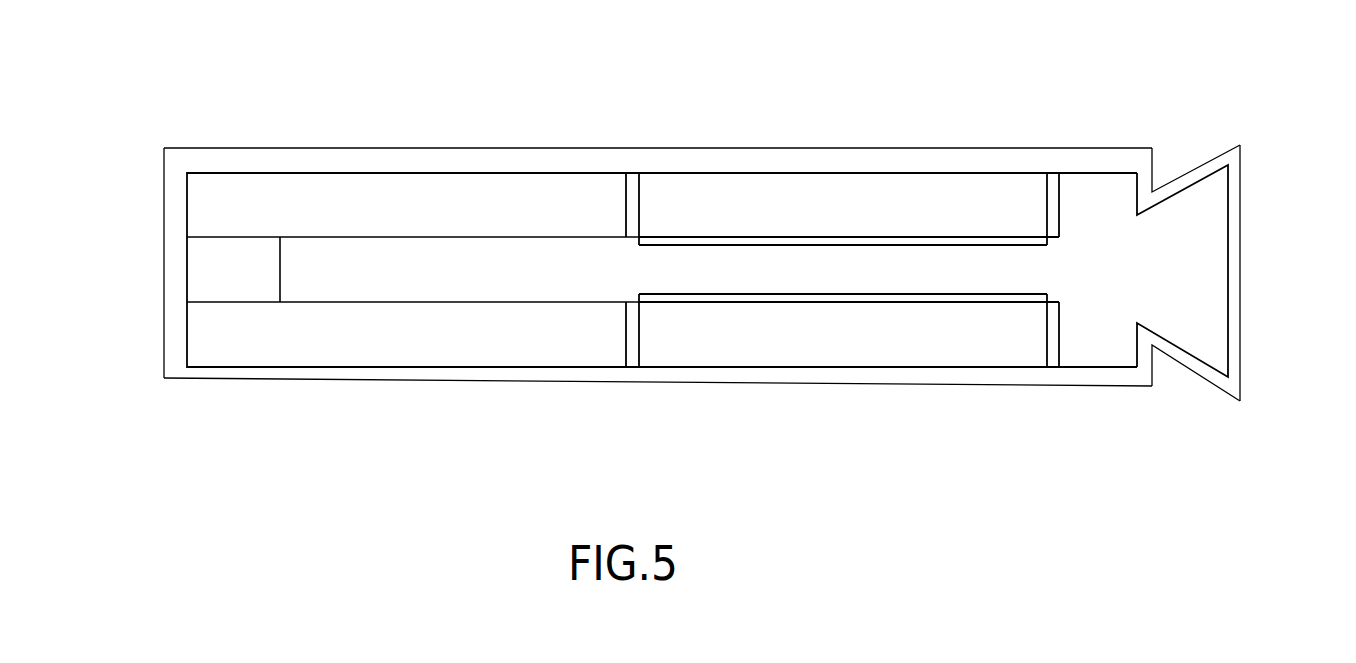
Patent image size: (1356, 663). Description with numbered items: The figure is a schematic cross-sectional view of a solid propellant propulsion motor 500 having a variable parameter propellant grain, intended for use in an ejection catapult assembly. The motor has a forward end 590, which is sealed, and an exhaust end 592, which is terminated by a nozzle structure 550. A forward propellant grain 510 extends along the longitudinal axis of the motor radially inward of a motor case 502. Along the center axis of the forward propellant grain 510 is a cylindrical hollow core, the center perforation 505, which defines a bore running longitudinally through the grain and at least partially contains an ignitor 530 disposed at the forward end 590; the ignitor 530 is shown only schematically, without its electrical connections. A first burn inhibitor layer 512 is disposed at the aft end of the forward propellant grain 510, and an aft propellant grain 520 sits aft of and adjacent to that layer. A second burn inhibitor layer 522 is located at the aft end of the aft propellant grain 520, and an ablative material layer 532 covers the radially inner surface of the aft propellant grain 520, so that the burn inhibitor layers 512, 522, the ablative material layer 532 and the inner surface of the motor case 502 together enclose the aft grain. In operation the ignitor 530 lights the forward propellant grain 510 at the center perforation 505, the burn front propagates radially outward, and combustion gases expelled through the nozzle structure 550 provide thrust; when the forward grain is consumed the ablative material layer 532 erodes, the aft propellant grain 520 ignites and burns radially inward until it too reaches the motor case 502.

The solid propellant propulsion motor 500 is at (819, 74).
The motor case 502 is at (439, 160).
The center perforation 505 is at (347, 237).
The forward propellant grain 510 is at (542, 193).
The first burn inhibitor layer 512 is at (633, 193).
The aft propellant grain 520 is at (735, 195).
The second burn inhibitor layer 522 is at (1053, 197).
The ignitor 530 is at (228, 255).
The ablative material layer 532 is at (922, 237).
The nozzle structure 550 is at (1195, 168).
The forward end 590 is at (163, 253).
The exhaust end 592 is at (1240, 272).